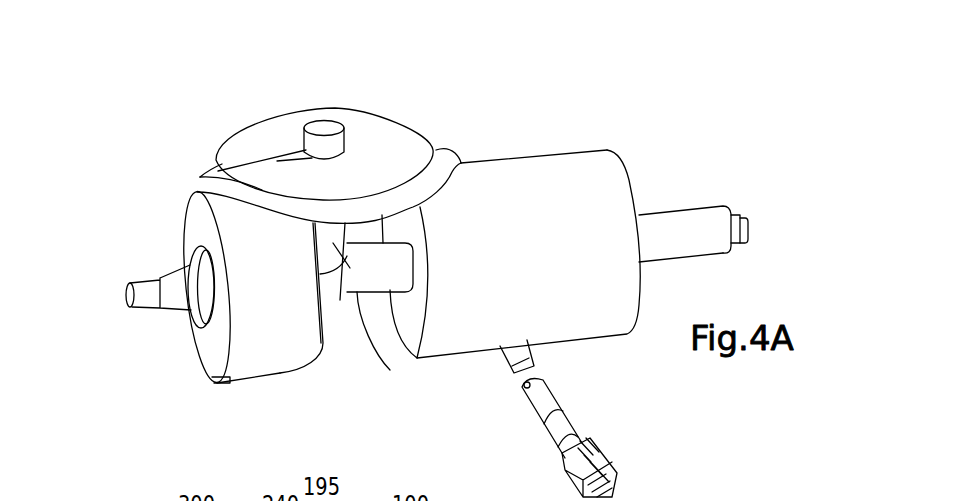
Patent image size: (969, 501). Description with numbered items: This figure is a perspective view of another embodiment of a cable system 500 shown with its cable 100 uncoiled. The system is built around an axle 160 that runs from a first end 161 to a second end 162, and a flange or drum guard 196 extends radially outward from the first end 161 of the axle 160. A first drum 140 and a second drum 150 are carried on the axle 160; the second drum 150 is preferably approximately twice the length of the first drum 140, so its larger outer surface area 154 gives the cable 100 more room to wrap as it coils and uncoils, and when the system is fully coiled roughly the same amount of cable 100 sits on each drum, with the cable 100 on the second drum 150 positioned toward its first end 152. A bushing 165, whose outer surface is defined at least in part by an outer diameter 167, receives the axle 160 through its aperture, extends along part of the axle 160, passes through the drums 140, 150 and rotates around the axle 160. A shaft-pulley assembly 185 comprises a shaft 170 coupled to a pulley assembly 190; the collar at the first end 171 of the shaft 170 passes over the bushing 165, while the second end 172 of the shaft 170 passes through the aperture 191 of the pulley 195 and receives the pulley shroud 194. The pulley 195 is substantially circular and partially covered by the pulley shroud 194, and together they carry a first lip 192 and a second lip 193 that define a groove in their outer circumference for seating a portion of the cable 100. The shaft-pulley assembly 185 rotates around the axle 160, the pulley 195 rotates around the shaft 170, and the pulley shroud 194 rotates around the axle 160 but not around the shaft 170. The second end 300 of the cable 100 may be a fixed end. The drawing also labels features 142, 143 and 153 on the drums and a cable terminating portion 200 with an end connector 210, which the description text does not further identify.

The cable system 500 is at (704, 94).
The shaft-pulley assembly 185 is at (288, 88).
The pulley assembly 190 is at (393, 118).
The pulley 195 is at (322, 104).
The pulley shroud 194 is at (347, 177).
The second end of the shaft 172 is at (312, 130).
The aperture 191 is at (277, 161).
The first lip 192 is at (218, 171).
The second lip 193 is at (433, 150).
The first drum 140 is at (188, 224).
The housing rim 142 is at (227, 350).
The second end of the cable 300 is at (224, 394).
The drum guard 196 is at (186, 258).
The first end of the axle 161 is at (125, 281).
The first end of the shaft 171 is at (340, 300).
The strap bend 143 is at (318, 348).
The shaft 170 is at (390, 370).
The second drum 150 is at (620, 167).
The outer surface area 154 is at (560, 207).
The housing end wall 153 is at (640, 292).
The first end of the second drum 152 is at (437, 330).
The outer diameter 167 is at (697, 210).
The bushing 165 is at (683, 245).
The axle 160 is at (743, 227).
The second end of the axle 162 is at (747, 247).
The cable 100 is at (547, 398).
The cable boot 200 is at (573, 430).
The plug 210 is at (617, 473).